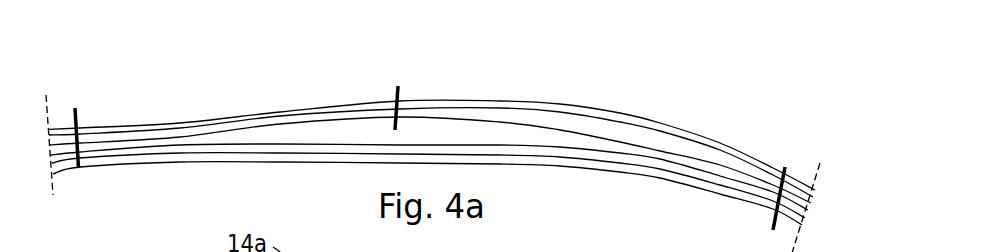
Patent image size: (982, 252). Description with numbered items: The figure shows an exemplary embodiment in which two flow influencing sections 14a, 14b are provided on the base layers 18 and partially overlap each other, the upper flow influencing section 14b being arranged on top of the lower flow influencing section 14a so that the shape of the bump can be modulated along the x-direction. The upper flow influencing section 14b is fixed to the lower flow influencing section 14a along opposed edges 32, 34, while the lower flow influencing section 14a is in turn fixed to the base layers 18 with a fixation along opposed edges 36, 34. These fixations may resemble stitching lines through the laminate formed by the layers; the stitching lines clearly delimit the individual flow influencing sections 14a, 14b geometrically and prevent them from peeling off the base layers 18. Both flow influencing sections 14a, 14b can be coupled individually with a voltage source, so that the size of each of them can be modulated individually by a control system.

The lower flow influencing section 14a is at (320, 94).
The upper flow influencing section 14b is at (621, 99).
The base layers 18 is at (653, 177).
The edge 32 is at (398, 88).
The edge 34 is at (782, 167).
The edge 36 is at (75, 108).